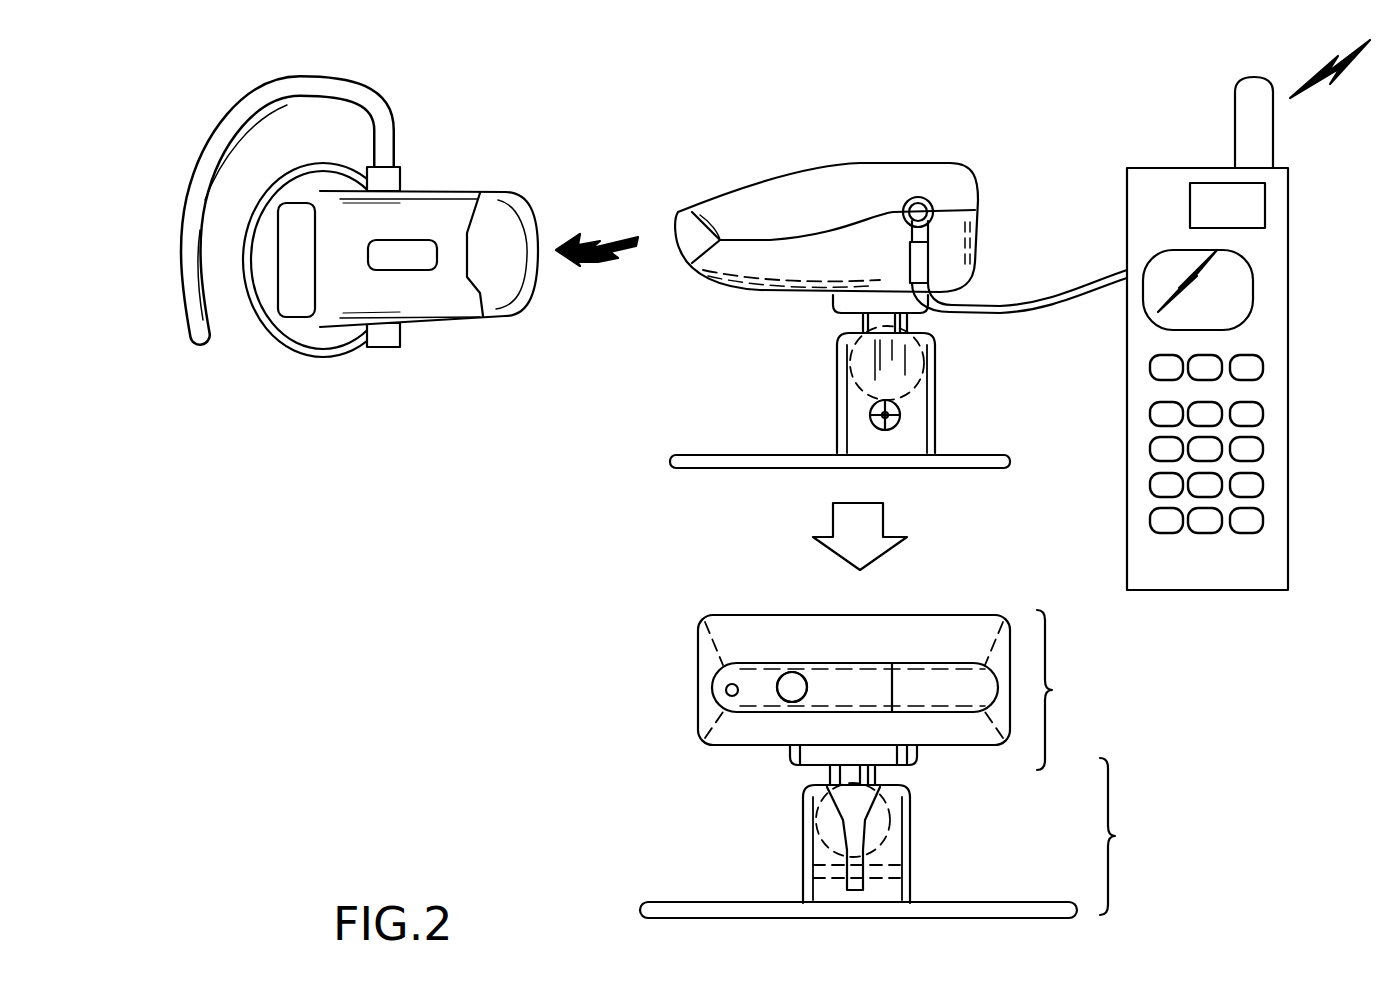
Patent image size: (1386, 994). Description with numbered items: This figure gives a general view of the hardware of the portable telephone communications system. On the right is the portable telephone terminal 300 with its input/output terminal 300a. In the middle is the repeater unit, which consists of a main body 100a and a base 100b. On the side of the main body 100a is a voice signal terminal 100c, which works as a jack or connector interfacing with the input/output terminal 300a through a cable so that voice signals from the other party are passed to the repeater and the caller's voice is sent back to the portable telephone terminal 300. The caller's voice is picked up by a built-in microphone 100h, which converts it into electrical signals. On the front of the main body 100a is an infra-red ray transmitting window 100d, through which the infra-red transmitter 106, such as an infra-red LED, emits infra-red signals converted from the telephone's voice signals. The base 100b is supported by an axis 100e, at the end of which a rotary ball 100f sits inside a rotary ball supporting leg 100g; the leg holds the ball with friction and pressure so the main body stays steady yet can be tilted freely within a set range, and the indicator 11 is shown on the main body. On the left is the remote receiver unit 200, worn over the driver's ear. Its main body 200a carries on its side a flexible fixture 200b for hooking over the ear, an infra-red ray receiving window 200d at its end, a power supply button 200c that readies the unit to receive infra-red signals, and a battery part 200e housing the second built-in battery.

The remote receiver unit 200 is at (335, 340).
The main body 200a is at (440, 203).
The fixture 200b is at (190, 327).
The power supply button 200c is at (417, 262).
The infra-red ray receiving window 200d is at (507, 220).
The battery part 200e is at (257, 327).
The indicator 11 is at (792, 687).
The main body 100a is at (912, 690).
The base 100b is at (1141, 836).
The voice signal terminal 100c is at (932, 200).
The infra-red ray transmitting window 100d is at (680, 263).
The infra-red transmitter 106 is at (843, 463).
The axis 100e is at (907, 322).
The rotary ball 100f is at (837, 383).
The rotary ball supporting leg 100g is at (920, 435).
The microphone 100h is at (777, 690).
The portable telephone terminal 300 is at (1188, 592).
The input/output terminal 300a is at (1230, 183).